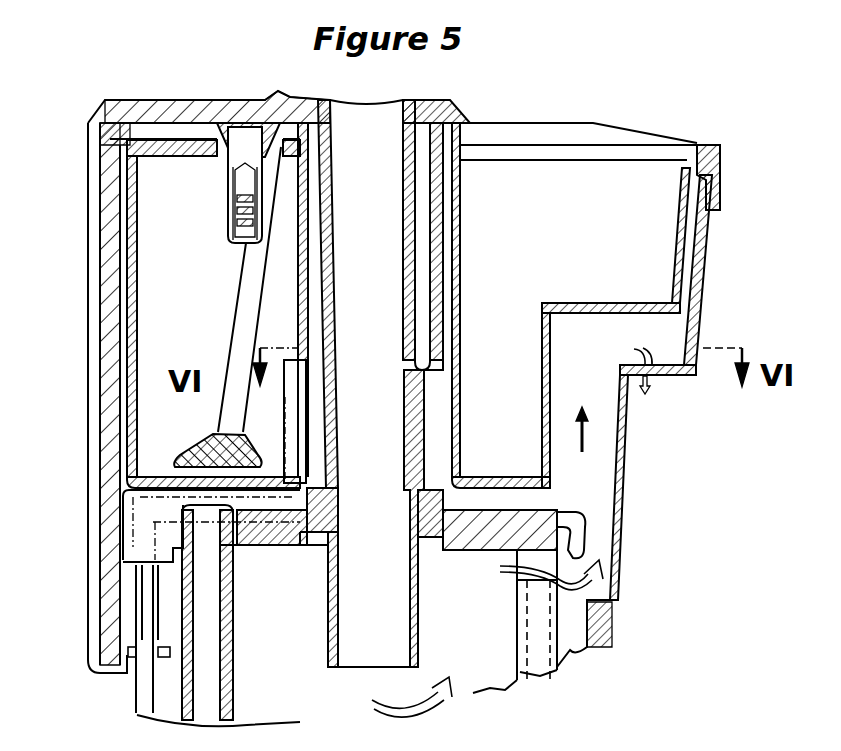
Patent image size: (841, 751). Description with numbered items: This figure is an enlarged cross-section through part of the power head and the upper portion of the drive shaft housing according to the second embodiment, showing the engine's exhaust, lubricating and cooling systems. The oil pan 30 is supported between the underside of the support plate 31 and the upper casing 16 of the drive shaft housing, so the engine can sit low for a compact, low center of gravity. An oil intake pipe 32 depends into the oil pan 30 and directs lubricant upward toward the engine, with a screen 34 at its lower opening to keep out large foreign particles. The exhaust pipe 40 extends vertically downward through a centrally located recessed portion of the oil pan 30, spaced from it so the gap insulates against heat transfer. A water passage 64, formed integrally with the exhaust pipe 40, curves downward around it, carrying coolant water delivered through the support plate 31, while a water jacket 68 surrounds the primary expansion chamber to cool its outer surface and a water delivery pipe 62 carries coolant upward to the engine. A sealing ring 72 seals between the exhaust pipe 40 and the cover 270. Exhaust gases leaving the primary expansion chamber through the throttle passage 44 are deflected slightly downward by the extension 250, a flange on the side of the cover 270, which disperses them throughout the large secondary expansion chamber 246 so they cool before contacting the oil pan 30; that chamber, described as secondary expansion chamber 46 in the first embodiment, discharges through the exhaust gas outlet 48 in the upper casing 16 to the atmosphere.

The upper casing 16 is at (700, 268).
The oil pan 30 is at (128, 237).
The support plate 31 is at (455, 112).
The oil intake pipe 32 is at (243, 295).
The screen 34 is at (207, 437).
The exhaust pipe 40 is at (417, 627).
The throttle passage 44 is at (517, 583).
The secondary expansion chamber 46 is at (242, 192).
The exhaust gas outlet 48 is at (655, 377).
The water delivery pipe 62 is at (135, 686).
The water passage 64 is at (417, 350).
The water jacket 68 is at (560, 623).
The sealing ring 72 is at (452, 523).
The secondary expansion chamber 246 is at (611, 353).
The extension 250 is at (580, 542).
The cover 270 is at (557, 505).